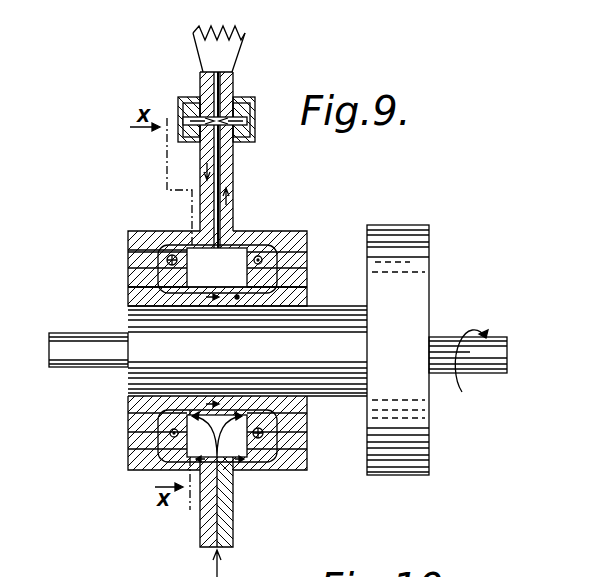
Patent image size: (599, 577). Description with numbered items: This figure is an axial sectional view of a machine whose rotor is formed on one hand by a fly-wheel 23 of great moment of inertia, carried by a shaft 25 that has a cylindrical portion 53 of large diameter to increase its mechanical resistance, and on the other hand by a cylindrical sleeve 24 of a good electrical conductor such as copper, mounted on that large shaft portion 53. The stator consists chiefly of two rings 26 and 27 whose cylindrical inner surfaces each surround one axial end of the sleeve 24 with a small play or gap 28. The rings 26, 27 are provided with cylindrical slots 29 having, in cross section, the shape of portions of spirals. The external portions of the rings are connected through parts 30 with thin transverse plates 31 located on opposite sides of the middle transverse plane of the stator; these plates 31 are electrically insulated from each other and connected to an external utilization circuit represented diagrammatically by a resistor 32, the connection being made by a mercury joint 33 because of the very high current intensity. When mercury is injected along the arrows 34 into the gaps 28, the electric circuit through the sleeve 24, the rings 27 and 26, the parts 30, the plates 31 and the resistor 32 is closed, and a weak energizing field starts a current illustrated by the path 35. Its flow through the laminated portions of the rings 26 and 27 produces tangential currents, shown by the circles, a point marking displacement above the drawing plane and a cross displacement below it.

The fly-wheel 23 is at (420, 283).
The cylindrical sleeve 24 is at (307, 296).
The shaft 25 is at (85, 334).
The ring 26 is at (128, 259).
The ring 27 is at (300, 266).
The gap 28 is at (128, 288).
The cylindrical slots 29 is at (306, 246).
The parts 30 is at (233, 232).
The thin transverse plates 31 is at (228, 176).
The resistor 32 is at (225, 30).
The mercury joint 33 is at (238, 118).
The arrows 34 is at (218, 437).
The current path 35 is at (166, 231).
The cylindrical portion 53 is at (247, 351).